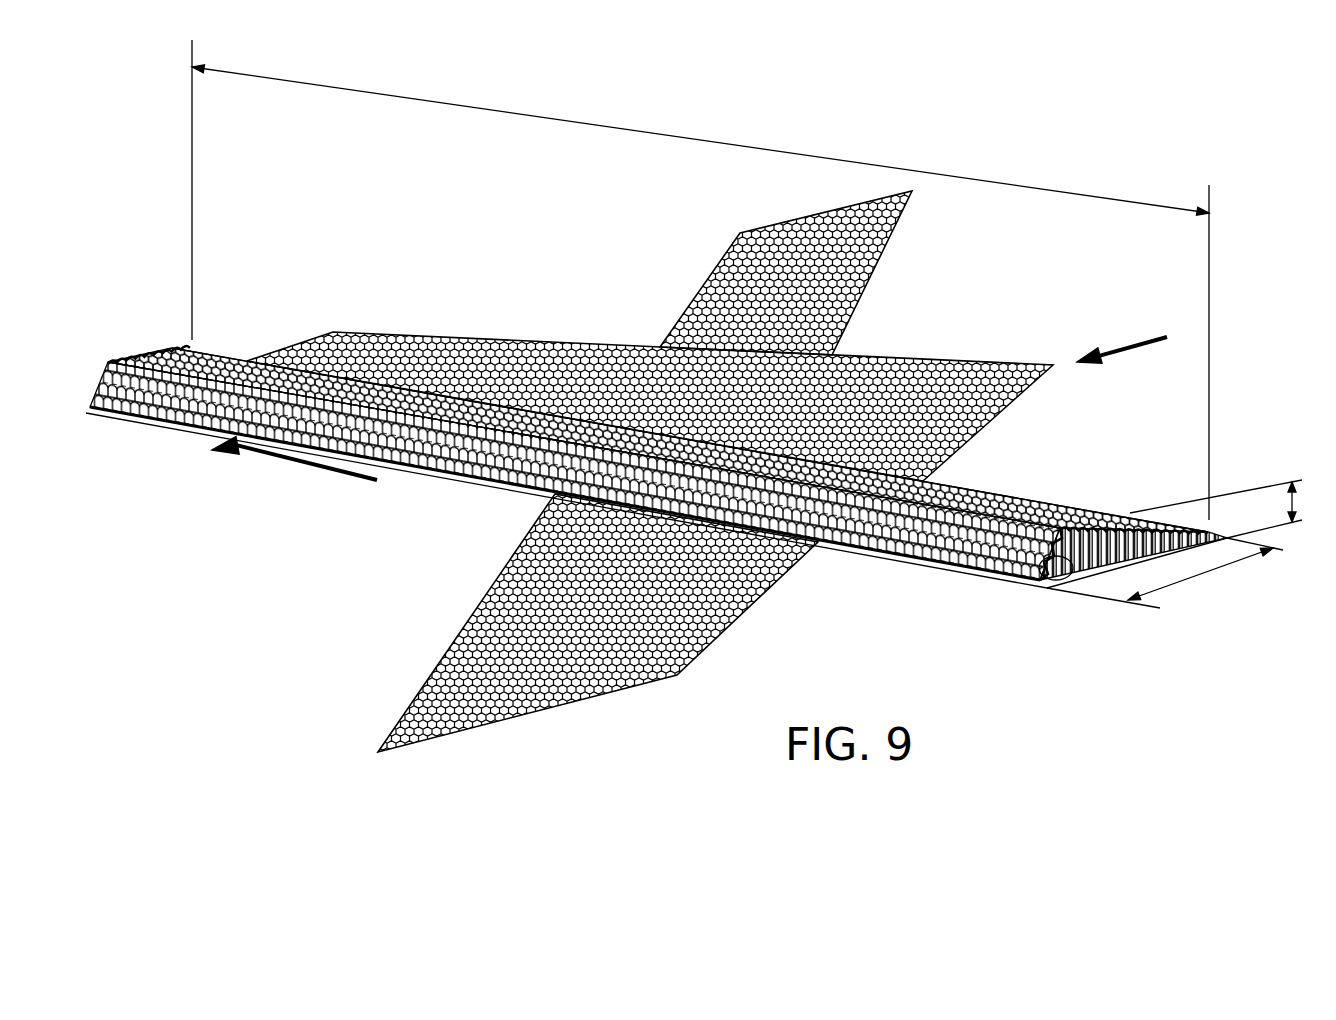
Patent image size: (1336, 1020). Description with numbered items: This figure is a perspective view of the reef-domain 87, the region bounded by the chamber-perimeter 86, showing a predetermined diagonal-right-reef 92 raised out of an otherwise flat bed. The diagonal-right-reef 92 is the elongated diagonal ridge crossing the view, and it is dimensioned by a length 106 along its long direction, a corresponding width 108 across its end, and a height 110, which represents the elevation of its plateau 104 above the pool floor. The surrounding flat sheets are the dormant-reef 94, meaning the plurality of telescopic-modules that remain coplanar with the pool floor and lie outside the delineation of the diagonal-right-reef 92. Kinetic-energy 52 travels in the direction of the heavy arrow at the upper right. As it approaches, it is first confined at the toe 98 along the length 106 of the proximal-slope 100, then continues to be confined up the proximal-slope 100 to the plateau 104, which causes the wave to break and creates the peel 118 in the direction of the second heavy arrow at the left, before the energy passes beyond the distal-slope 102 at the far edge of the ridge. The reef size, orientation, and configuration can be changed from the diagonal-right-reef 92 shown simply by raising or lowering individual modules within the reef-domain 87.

The kinetic-energy 52 is at (1108, 352).
The chamber-perimeter 86 is at (695, 300).
The reef-domain 87 is at (538, 320).
The diagonal-right-reef 92 is at (453, 449).
The dormant-reef 94 is at (758, 391).
The toe 98 is at (1023, 498).
The proximal-slope 100 is at (1172, 530).
The distal-slope 102 is at (1068, 580).
The plateau 104 is at (160, 348).
The length 106 is at (998, 178).
The width 108 is at (1177, 583).
The height 110 is at (1287, 503).
The peel 118 is at (262, 462).